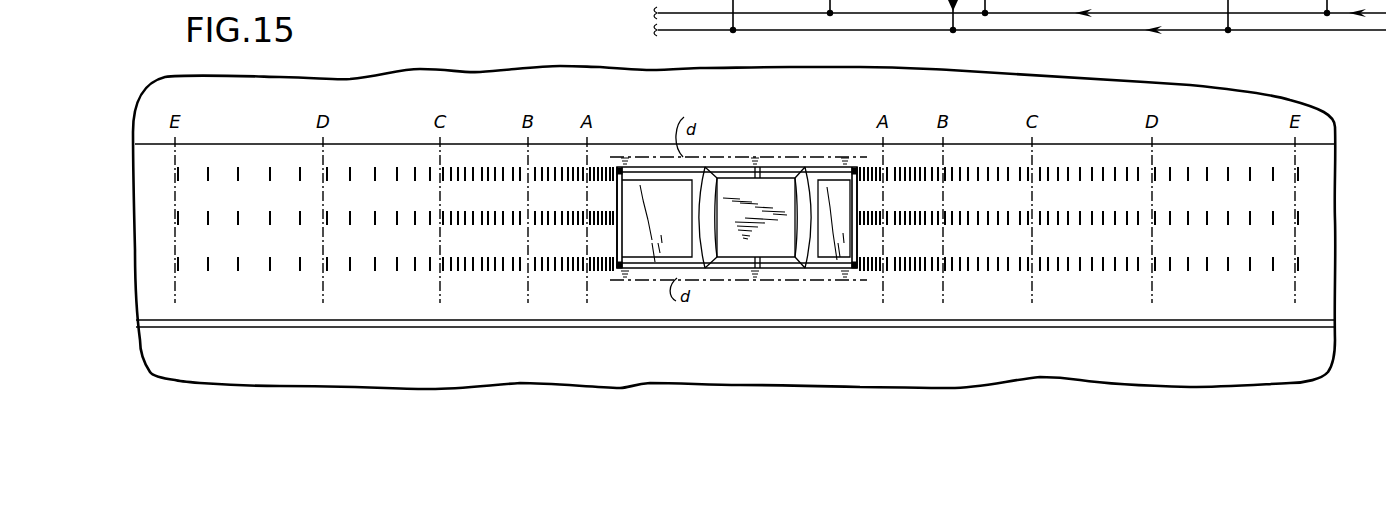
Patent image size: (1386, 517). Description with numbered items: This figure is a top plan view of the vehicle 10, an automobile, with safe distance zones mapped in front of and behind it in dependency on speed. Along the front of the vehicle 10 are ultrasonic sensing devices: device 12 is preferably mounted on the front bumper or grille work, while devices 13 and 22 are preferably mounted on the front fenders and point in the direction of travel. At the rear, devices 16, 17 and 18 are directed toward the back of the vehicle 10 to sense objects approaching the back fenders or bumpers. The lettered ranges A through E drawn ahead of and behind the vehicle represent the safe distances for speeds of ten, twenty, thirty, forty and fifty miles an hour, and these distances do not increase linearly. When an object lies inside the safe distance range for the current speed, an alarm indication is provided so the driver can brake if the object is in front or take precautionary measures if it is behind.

The vehicle 10 is at (684, 220).
The ultrasonic sensing device 12 is at (618, 218).
The ultrasonic sensing device 13 is at (617, 175).
The ultrasonic sensing device 22 is at (617, 265).
The ultrasonic sensing device 16 is at (856, 170).
The ultrasonic sensing device 17 is at (854, 217).
The ultrasonic sensing device 18 is at (857, 262).